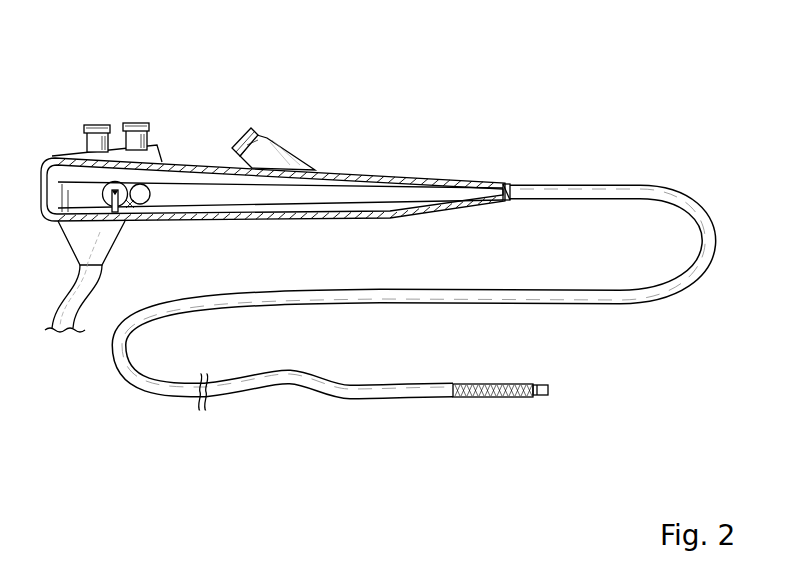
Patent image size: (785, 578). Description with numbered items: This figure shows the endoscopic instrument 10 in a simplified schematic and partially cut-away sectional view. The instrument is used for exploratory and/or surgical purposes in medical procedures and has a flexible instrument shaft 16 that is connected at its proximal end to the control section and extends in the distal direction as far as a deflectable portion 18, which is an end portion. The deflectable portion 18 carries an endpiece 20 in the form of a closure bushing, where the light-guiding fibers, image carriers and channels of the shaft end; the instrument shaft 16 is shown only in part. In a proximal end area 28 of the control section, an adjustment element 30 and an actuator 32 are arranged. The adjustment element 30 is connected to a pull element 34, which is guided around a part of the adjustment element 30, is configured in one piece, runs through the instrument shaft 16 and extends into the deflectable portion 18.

The endoscopic instrument 10 is at (271, 187).
The instrument shaft 16 is at (648, 189).
The deflectable portion 18 is at (493, 398).
The endpiece 20 is at (550, 390).
The proximal end area 28 is at (197, 140).
The adjustment element 30 is at (128, 216).
The actuator 32 is at (143, 208).
The pull element 34 is at (388, 200).